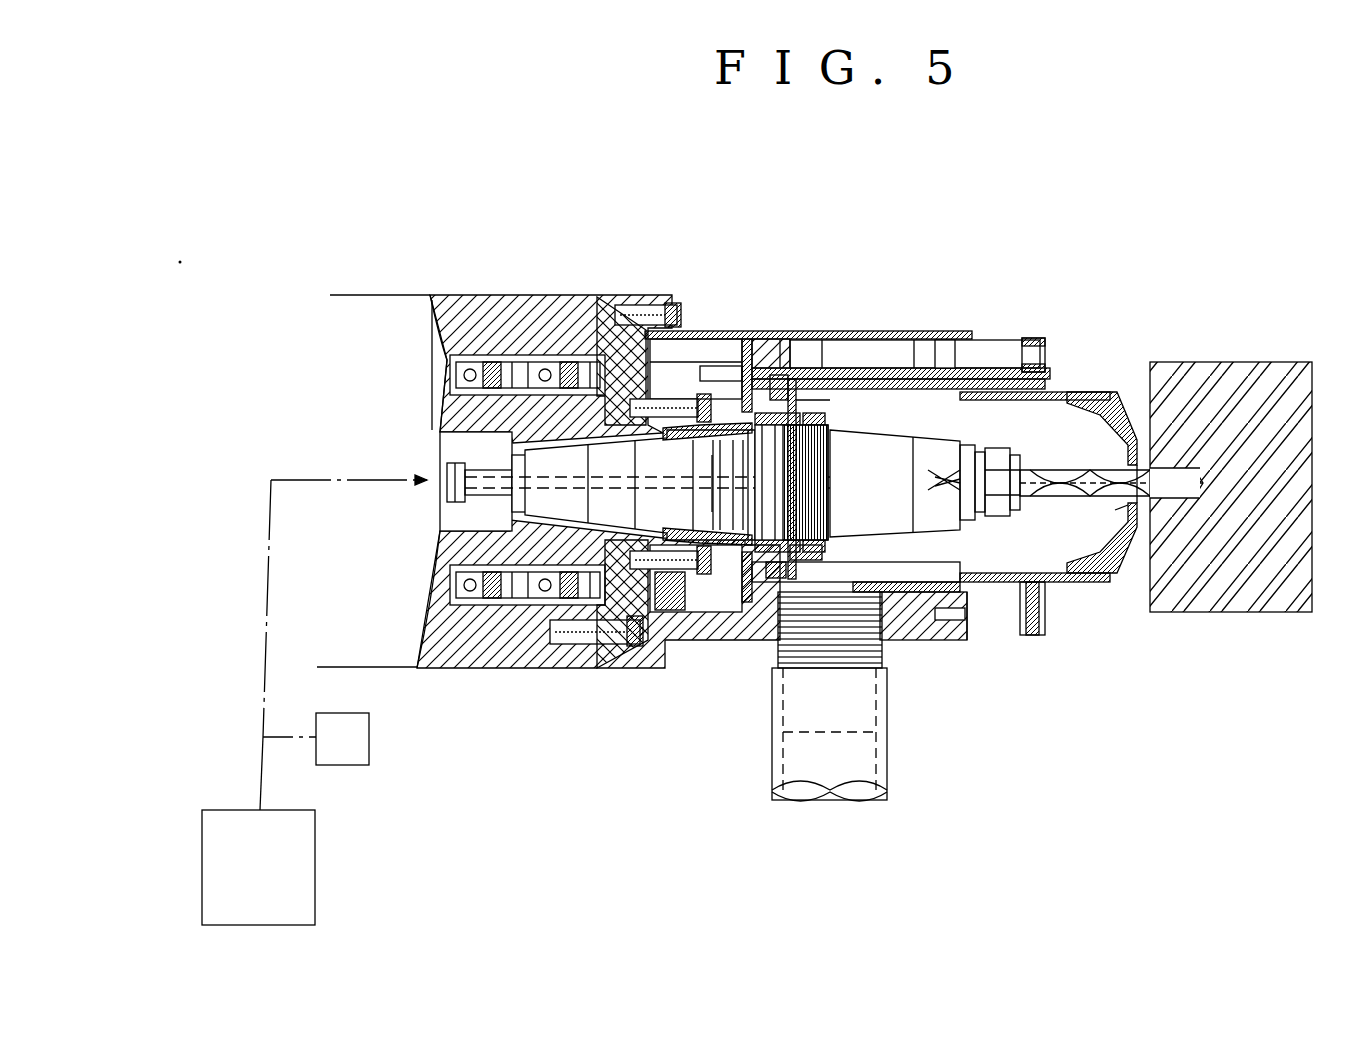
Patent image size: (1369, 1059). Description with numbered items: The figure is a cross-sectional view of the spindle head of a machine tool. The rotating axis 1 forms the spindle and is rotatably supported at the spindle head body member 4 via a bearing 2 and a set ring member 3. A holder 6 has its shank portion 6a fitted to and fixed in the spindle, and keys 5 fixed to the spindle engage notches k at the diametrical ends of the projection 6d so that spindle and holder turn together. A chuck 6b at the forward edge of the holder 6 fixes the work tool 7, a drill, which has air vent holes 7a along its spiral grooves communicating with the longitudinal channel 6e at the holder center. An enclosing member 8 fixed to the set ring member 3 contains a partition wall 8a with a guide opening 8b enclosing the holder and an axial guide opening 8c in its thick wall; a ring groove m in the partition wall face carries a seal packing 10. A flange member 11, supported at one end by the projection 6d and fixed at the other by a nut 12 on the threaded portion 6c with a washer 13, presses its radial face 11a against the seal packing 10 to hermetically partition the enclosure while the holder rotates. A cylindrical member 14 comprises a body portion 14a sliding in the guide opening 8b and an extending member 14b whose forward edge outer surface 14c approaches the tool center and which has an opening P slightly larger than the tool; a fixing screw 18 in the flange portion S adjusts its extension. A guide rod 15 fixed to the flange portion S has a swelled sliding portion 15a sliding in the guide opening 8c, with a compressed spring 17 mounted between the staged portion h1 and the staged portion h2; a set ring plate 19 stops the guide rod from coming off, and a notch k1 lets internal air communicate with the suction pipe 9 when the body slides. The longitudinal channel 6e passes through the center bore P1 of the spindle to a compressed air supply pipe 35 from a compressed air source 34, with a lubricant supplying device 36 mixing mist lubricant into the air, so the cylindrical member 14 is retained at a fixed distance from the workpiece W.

The rotating axis 1 is at (507, 607).
The bearing 2 is at (483, 295).
The set ring member 3 is at (622, 295).
The spindle head body member 4 is at (455, 295).
The key 5 is at (698, 394).
The holder 6 is at (870, 431).
The shank portion 6a is at (605, 510).
The chuck 6b is at (1005, 520).
The threaded portion 6c is at (823, 518).
The projection 6d is at (803, 453).
The longitudinal channel 6e is at (893, 477).
The work tool 7 is at (1072, 470).
The air vent hole 7a is at (950, 470).
The enclosing member 8 is at (733, 331).
The partition wall 8a is at (750, 340).
The guide opening 8b is at (800, 372).
The guide opening 8c is at (877, 338).
The suction pipe 9 is at (865, 762).
The seal packing 10 is at (792, 379).
The flange member 11 is at (743, 635).
The face 11a is at (744, 398).
The nut 12 is at (822, 548).
The washer 13 is at (822, 340).
The cylindrical member 14 is at (1075, 402).
The body portion 14a is at (1020, 392).
The extending member 14b is at (1135, 420).
The outer surface 14c is at (1134, 560).
The guide rod 15 is at (1002, 340).
The swelled sliding portion 15a is at (947, 340).
The spring 17 is at (848, 368).
The fixing screw 18 is at (1048, 620).
The set ring plate 19 is at (970, 630).
The compressed air source 34 is at (300, 894).
The compressed air supply pipe 35 is at (263, 648).
The lubricant supplying device 36 is at (352, 760).
The staged portion h1 is at (781, 340).
The staged portion h2 is at (914, 340).
The notch k is at (717, 458).
The notch k1 is at (912, 586).
The ring groove m is at (772, 633).
The opening P is at (1115, 510).
The center bore P1 is at (445, 452).
The flange portion S is at (1045, 371).
The workpiece W is at (1312, 490).